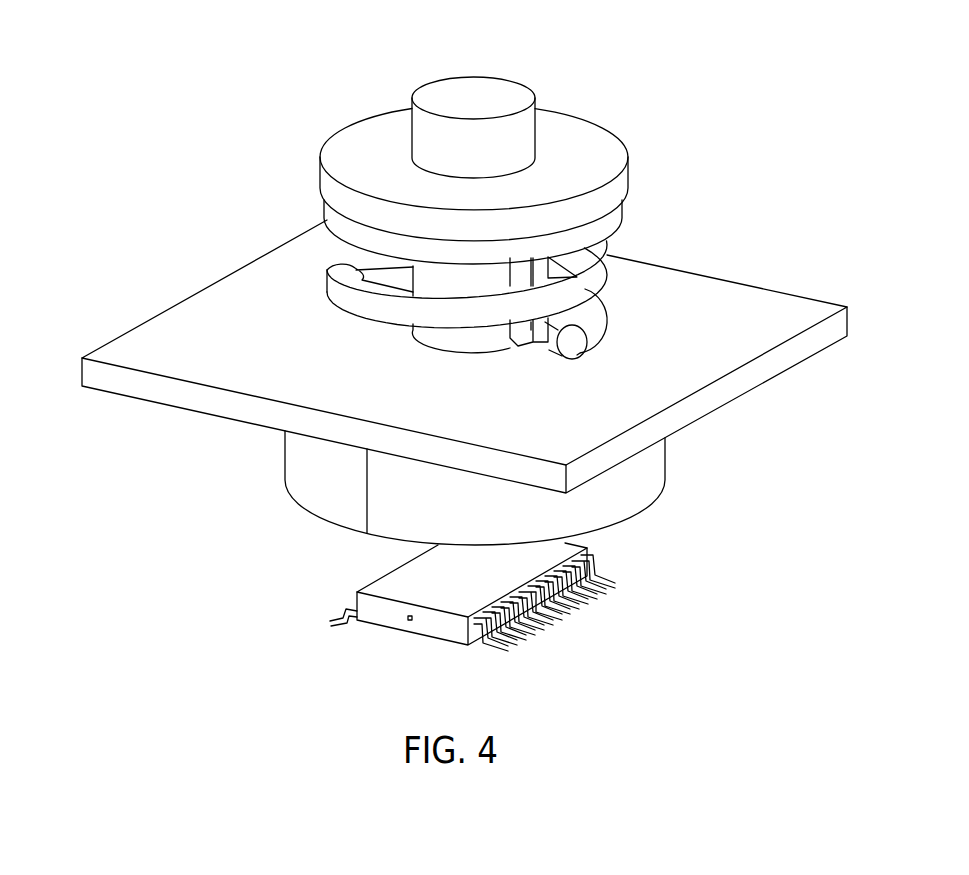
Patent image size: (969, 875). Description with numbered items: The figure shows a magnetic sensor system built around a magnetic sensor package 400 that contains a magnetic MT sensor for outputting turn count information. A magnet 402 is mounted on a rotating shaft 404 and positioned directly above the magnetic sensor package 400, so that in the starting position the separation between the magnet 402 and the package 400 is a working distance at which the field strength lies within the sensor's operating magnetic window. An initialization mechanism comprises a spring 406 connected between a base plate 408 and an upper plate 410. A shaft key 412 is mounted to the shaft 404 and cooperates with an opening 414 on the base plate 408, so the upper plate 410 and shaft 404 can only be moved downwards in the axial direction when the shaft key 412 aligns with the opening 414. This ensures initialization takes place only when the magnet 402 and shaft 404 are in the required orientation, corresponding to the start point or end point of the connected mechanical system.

The magnetic sensor package 400 is at (587, 613).
The magnet 402 is at (658, 493).
The rotating shaft 404 is at (473, 75).
The spring 406 is at (353, 233).
The base plate 408 is at (160, 392).
The upper plate 410 is at (603, 153).
The shaft key 412 is at (575, 318).
The opening 414 is at (543, 352).